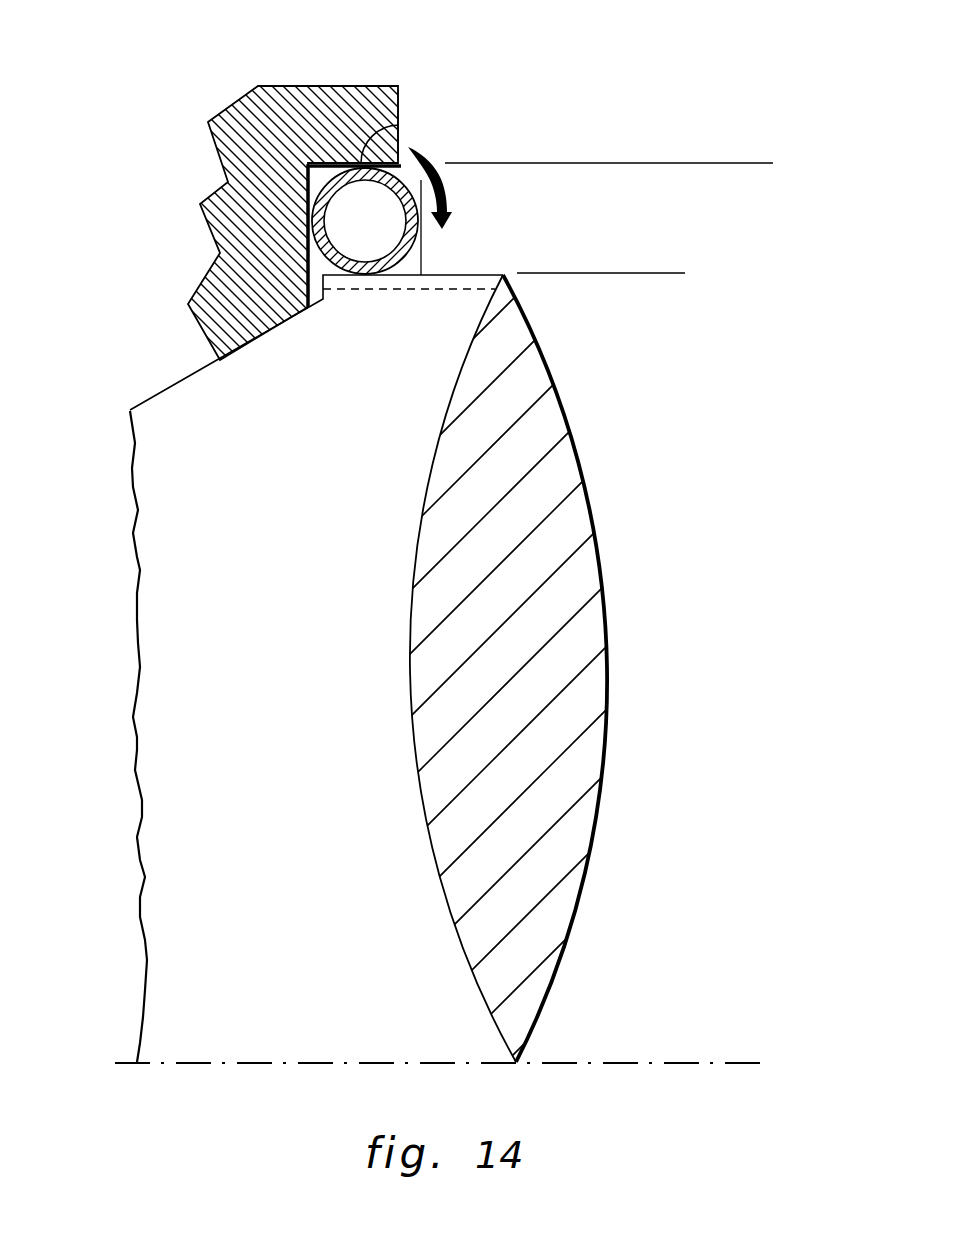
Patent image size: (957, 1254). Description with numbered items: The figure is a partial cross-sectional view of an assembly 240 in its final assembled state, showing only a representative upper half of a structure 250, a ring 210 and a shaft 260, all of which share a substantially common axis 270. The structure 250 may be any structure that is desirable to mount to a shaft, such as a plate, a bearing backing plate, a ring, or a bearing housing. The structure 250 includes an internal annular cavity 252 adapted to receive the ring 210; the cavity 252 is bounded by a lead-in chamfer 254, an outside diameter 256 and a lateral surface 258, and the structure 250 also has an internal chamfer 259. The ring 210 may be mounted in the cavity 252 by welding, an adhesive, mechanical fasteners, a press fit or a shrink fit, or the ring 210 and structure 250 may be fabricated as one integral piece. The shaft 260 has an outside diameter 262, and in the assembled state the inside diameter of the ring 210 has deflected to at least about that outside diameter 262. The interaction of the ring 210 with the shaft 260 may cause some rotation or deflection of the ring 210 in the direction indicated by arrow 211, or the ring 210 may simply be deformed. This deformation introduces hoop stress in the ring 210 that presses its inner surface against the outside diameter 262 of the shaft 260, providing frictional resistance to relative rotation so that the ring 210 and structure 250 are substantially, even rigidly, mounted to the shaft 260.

The assembly 240 is at (690, 124).
The structure 250 is at (294, 86).
The internal annular cavity 252 is at (400, 137).
The lead-in chamfer 254 is at (443, 160).
The outside diameter 256 is at (748, 167).
The lateral surface 258 is at (307, 222).
The internal chamfer 259 is at (250, 347).
The shaft 260 is at (600, 553).
The outside diameter 262 is at (648, 277).
The ring 210 is at (420, 253).
The arrow 211 is at (445, 189).
The common axis 270 is at (378, 1066).